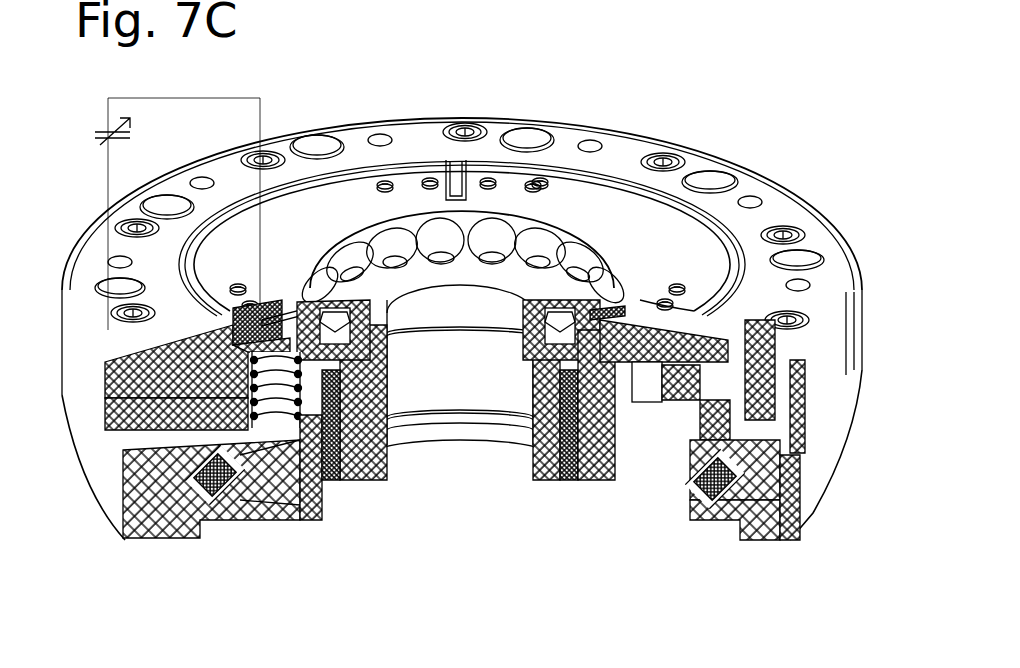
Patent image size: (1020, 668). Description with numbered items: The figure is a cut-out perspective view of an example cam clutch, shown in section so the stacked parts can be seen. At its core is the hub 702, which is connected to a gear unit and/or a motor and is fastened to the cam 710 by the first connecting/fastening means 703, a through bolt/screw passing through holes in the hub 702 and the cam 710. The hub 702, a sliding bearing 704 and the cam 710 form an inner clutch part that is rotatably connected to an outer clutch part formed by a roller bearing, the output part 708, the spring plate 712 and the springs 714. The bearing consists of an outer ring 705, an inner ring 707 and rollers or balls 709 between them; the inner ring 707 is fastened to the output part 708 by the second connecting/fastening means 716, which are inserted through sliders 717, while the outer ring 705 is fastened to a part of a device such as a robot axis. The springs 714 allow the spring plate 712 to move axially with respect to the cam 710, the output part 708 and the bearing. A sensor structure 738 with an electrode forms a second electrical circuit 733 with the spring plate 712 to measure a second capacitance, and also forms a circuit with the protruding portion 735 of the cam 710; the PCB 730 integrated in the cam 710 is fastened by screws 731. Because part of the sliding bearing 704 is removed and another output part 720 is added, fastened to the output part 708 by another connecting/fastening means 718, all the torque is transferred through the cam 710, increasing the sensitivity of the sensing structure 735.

The hub 702 is at (330, 488).
The first connecting/fastening means 703 is at (395, 462).
The sliding bearing 704 is at (573, 493).
The outer ring 705 is at (107, 502).
The inner ring 707 is at (258, 494).
The output part 708 is at (96, 256).
The rollers or balls 709 is at (238, 497).
The cam 710 is at (702, 237).
The spring plate 712 is at (170, 385).
The springs 714 is at (170, 418).
The second connecting/fastening means 716 is at (637, 487).
The sliders 717 is at (670, 400).
The another connecting/fastening means 718 is at (468, 132).
The another output part 720 is at (848, 368).
The PCB 730 is at (665, 162).
The screws 731 is at (542, 180).
The second electrical circuit 733 is at (262, 98).
The protruding portion 735 is at (455, 200).
The sensor structure 738 is at (290, 312).